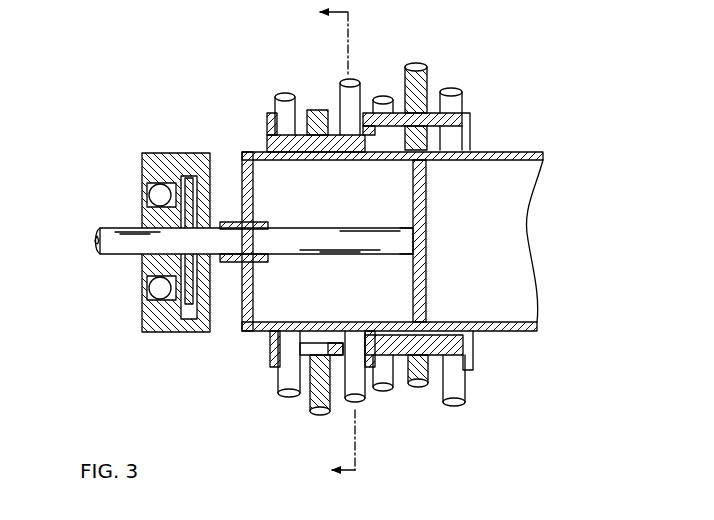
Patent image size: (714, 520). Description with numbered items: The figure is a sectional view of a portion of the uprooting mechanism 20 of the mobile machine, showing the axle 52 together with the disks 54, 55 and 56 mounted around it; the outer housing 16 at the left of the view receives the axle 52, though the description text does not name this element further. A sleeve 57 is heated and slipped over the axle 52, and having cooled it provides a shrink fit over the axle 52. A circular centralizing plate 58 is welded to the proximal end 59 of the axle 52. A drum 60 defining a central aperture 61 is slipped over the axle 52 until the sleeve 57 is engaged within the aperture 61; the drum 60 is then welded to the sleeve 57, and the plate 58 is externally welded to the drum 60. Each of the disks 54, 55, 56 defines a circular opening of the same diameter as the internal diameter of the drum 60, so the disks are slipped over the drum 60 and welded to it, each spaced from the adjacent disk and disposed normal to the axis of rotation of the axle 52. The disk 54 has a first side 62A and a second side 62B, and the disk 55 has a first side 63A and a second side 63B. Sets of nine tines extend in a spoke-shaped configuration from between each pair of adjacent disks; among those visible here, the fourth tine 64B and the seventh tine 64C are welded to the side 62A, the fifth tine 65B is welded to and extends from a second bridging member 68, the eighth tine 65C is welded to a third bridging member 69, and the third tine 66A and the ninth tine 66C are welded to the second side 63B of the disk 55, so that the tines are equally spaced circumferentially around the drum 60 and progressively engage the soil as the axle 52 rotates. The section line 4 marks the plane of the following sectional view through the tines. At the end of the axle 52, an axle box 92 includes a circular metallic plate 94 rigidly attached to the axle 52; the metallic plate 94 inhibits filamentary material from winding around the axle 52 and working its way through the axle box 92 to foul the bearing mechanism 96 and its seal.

The section line 4- 4 is at (326, 243).
The bearing housing 16 is at (157, 152).
The uprooting mechanism 20 is at (505, 63).
The axle 52 is at (118, 257).
The disk 54 is at (268, 128).
The disk 55 is at (393, 342).
The disk 56 is at (475, 356).
The sleeve 57 is at (225, 262).
The circular centralizing plate 58 is at (427, 268).
The proximal end 59 is at (397, 227).
The drum 60 is at (530, 331).
The central aperture 61 is at (255, 262).
The first side 62A is at (303, 343).
The second side 62B is at (268, 370).
The first side 63A is at (425, 160).
The second side 63B is at (362, 125).
The fourth tine 64B is at (280, 382).
The seventh tine 64C is at (283, 95).
The fifth tine 65B is at (310, 405).
The eighth tine 65C is at (318, 108).
The third tine 66A is at (368, 394).
The ninth tine 66C is at (352, 82).
The second bridging member 68 is at (355, 406).
The third bridging member 69 is at (293, 143).
The axle box 92 is at (110, 194).
The metallic plate 94 is at (190, 153).
The bearing mechanism 96 is at (147, 291).